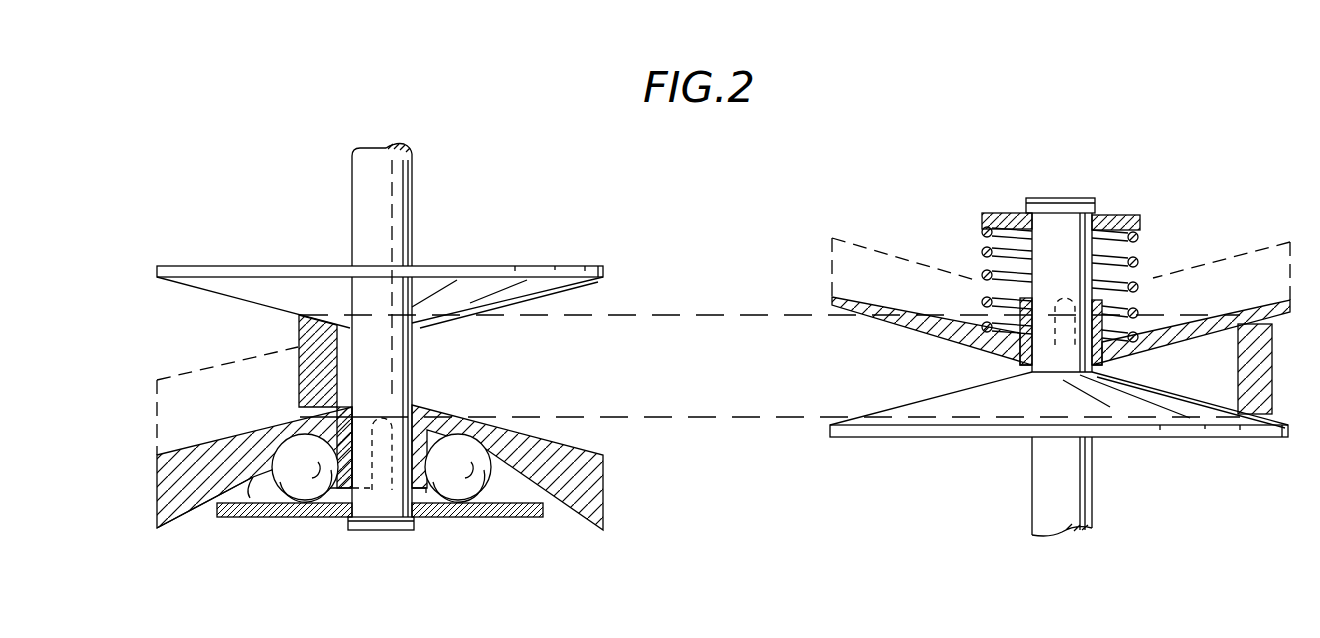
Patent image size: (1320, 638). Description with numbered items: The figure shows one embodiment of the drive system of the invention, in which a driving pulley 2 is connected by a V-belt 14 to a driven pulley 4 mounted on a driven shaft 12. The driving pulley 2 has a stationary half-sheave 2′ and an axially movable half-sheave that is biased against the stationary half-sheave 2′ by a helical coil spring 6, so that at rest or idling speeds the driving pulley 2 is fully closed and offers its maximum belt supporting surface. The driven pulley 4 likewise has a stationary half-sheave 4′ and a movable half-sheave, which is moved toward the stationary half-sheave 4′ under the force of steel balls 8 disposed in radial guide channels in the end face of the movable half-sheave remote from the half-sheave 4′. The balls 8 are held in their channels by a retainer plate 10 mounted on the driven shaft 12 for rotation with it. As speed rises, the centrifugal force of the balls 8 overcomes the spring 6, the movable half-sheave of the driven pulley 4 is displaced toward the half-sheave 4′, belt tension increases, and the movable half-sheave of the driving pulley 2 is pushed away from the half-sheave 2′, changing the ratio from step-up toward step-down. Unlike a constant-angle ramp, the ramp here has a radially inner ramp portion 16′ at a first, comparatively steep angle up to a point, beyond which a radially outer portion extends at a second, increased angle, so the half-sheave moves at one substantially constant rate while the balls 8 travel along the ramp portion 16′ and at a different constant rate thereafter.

The driving pulley 2 is at (1170, 447).
The stationary half-sheave 2′ is at (1248, 438).
The driven pulley 4 is at (502, 259).
The stationary half-sheave 4′ is at (380, 246).
The helical coil spring 6 is at (1140, 262).
The steel balls 8 is at (488, 490).
The retainer plate 10 is at (440, 514).
The driven shaft 12 is at (388, 185).
The V-belt 14 is at (716, 290).
The radially inner ramp portion 16′ is at (250, 498).